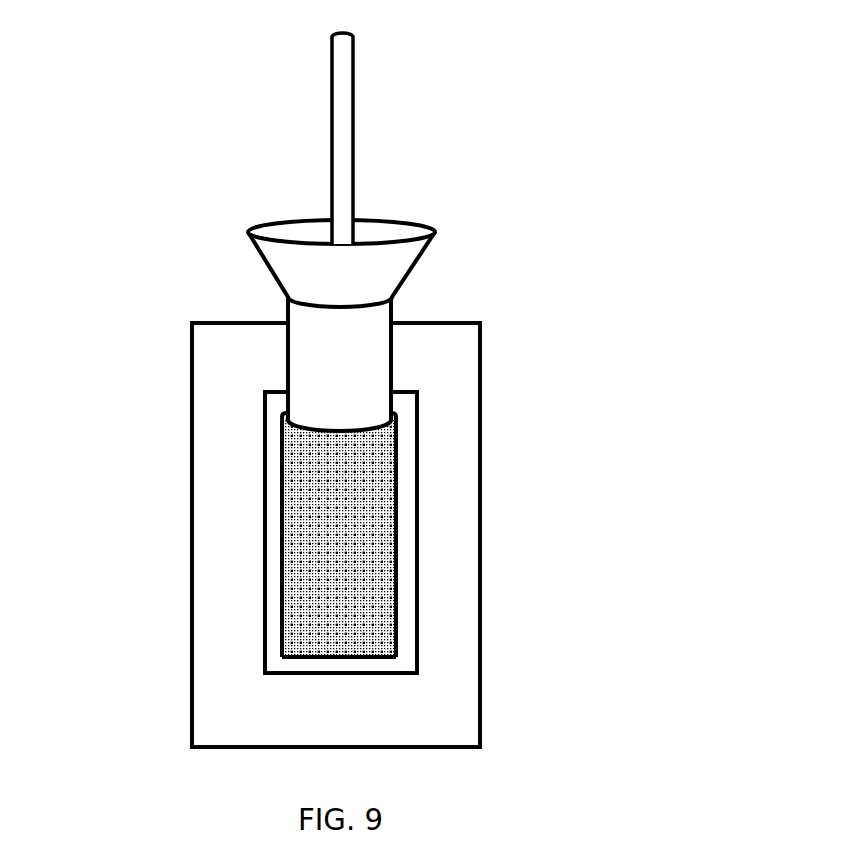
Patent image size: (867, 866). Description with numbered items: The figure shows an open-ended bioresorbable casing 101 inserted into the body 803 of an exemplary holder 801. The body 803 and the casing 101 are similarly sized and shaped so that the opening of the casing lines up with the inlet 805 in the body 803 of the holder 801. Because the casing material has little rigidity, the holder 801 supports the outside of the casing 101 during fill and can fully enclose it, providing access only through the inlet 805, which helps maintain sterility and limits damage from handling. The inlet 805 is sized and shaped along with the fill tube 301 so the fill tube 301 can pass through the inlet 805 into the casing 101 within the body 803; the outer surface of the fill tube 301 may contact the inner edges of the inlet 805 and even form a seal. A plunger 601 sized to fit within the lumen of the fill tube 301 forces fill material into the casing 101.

The plunger 601 is at (343, 98).
The fill tube 301 is at (378, 275).
The inlet 805 is at (288, 358).
The body 803 is at (270, 498).
The casing 101 is at (378, 485).
The holder 801 is at (447, 657).